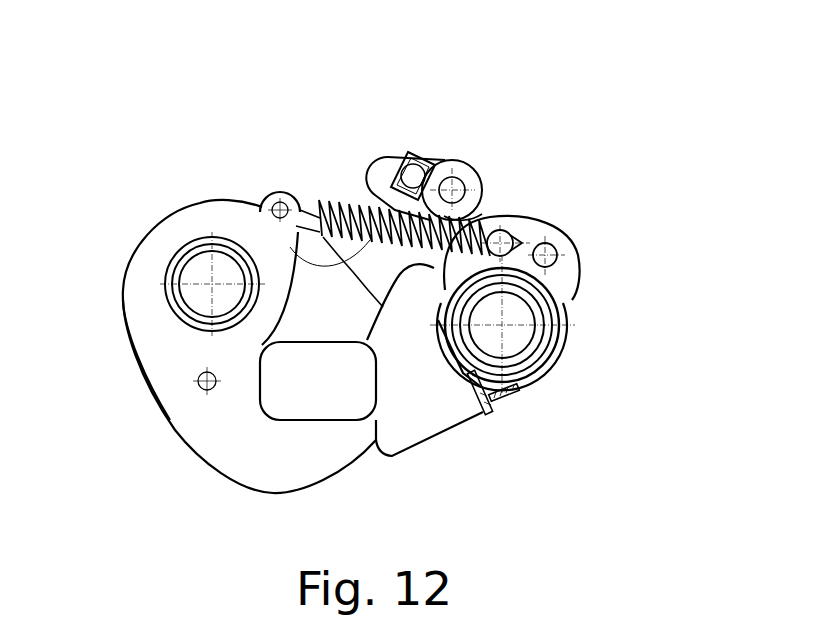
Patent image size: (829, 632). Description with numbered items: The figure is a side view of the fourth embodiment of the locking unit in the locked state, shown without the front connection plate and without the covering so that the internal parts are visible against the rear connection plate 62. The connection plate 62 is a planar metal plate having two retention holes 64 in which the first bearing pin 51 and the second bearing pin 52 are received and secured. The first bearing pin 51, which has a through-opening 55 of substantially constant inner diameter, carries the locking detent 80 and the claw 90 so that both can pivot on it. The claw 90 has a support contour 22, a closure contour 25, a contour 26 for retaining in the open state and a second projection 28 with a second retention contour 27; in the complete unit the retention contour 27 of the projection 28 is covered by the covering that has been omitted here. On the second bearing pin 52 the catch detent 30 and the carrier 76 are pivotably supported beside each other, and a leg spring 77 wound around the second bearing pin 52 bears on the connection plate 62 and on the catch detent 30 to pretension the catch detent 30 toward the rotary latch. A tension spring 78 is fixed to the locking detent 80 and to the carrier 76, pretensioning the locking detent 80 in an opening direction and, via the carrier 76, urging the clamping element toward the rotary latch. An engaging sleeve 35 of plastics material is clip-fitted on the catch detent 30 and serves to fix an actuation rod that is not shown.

The support contour 22 is at (345, 210).
The closure contour 25 is at (310, 192).
The contour for retaining in the open state 26 is at (410, 150).
The second retention contour 27 is at (315, 440).
The second projection 28 is at (270, 463).
The catch detent 30 is at (482, 213).
The engaging sleeve 35 is at (422, 158).
The first bearing pin 51 is at (172, 268).
The second bearing pin 52 is at (518, 398).
The through-opening 55 is at (198, 258).
The connection plate 62 is at (400, 415).
The retention hole 64 is at (178, 313).
The carrier 76 is at (535, 230).
The leg spring 77 is at (477, 420).
The tension spring 78 is at (317, 214).
The locking detent 80 is at (165, 355).
The claw 90 is at (313, 277).